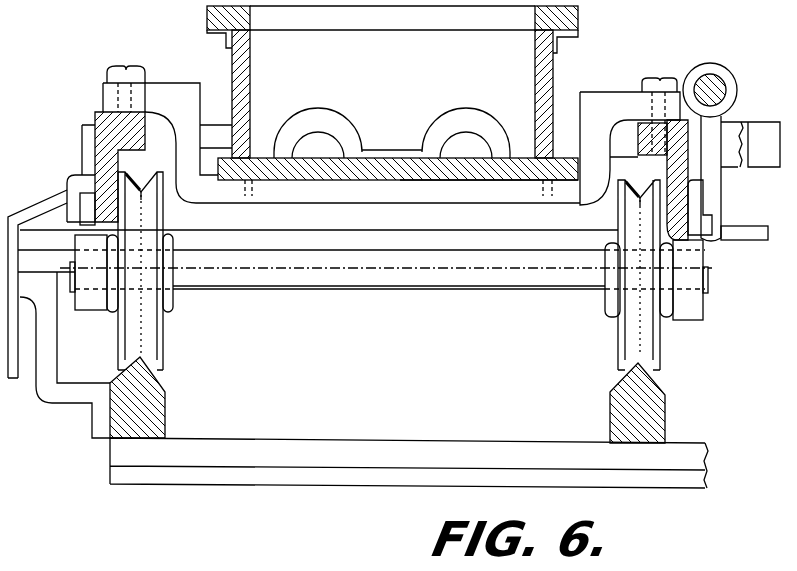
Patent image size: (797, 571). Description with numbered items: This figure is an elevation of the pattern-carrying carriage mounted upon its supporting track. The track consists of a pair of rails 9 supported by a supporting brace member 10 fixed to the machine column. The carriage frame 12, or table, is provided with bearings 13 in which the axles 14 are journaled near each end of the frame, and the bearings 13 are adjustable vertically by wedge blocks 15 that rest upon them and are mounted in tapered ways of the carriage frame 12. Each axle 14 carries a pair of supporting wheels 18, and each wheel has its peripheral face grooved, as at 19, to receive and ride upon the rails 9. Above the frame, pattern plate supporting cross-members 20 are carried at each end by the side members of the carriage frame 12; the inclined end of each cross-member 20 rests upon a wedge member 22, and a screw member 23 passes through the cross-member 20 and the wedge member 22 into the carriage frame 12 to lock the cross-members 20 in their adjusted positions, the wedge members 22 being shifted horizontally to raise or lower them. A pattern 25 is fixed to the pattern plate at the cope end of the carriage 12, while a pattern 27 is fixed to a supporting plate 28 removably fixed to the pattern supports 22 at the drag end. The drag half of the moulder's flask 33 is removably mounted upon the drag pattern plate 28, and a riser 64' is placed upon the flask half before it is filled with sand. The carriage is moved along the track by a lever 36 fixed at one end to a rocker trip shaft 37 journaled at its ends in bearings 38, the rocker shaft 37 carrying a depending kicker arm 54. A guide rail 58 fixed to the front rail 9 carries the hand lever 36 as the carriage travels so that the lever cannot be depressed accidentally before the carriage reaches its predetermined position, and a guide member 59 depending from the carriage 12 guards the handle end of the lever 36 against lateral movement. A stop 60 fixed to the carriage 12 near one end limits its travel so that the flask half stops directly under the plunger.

The rails 9 is at (632, 415).
The supporting brace member 10 is at (409, 463).
The carriage frame 12 is at (319, 219).
The bearings 13 is at (706, 305).
The axles 14 is at (462, 277).
The wedge blocks 15 is at (690, 230).
The supporting wheels 18 is at (619, 335).
The groove 19 is at (638, 352).
The pattern plate supporting cross-members 20 is at (398, 181).
The wedge member 22 is at (123, 127).
The screw member 23 is at (652, 80).
The pattern 25 is at (131, 56).
The pattern 27 is at (440, 137).
The supporting plate 28 is at (480, 178).
The drag half of moulder's flask 33 is at (392, 101).
The lever 36 is at (520, 251).
The rocker trip shaft 37 is at (708, 77).
The bearings 38 is at (750, 72).
The kicker arm 54 is at (745, 252).
The guide rail 58 is at (48, 382).
The guide member 59 is at (13, 243).
The stop 60 is at (770, 157).
The riser 64' is at (392, 19).